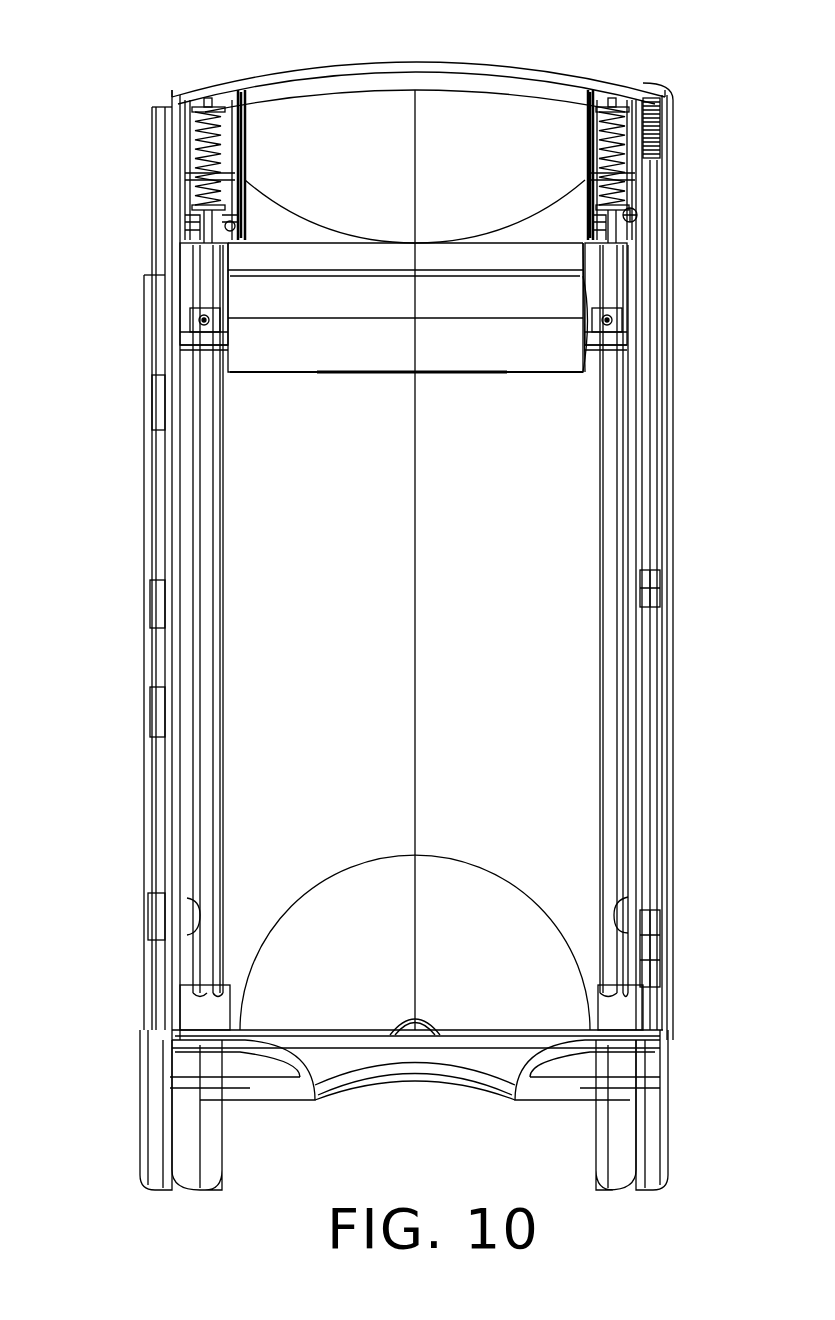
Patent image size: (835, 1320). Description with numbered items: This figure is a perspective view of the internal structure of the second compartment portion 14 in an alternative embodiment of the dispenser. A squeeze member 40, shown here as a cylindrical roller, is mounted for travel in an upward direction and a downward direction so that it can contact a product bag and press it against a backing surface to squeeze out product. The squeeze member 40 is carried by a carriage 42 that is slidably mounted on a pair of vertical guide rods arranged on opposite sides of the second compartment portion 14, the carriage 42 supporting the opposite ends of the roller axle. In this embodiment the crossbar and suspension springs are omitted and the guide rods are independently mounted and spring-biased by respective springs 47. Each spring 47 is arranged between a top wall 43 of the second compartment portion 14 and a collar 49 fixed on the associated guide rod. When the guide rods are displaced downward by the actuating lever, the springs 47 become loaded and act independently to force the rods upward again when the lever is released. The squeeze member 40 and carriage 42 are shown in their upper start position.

The second compartment portion 14 is at (146, 67).
The top wall 43 is at (358, 72).
The spring 47 is at (218, 137).
The collar 49 is at (203, 201).
The carriage 42 is at (436, 243).
The squeeze member 40 is at (297, 355).